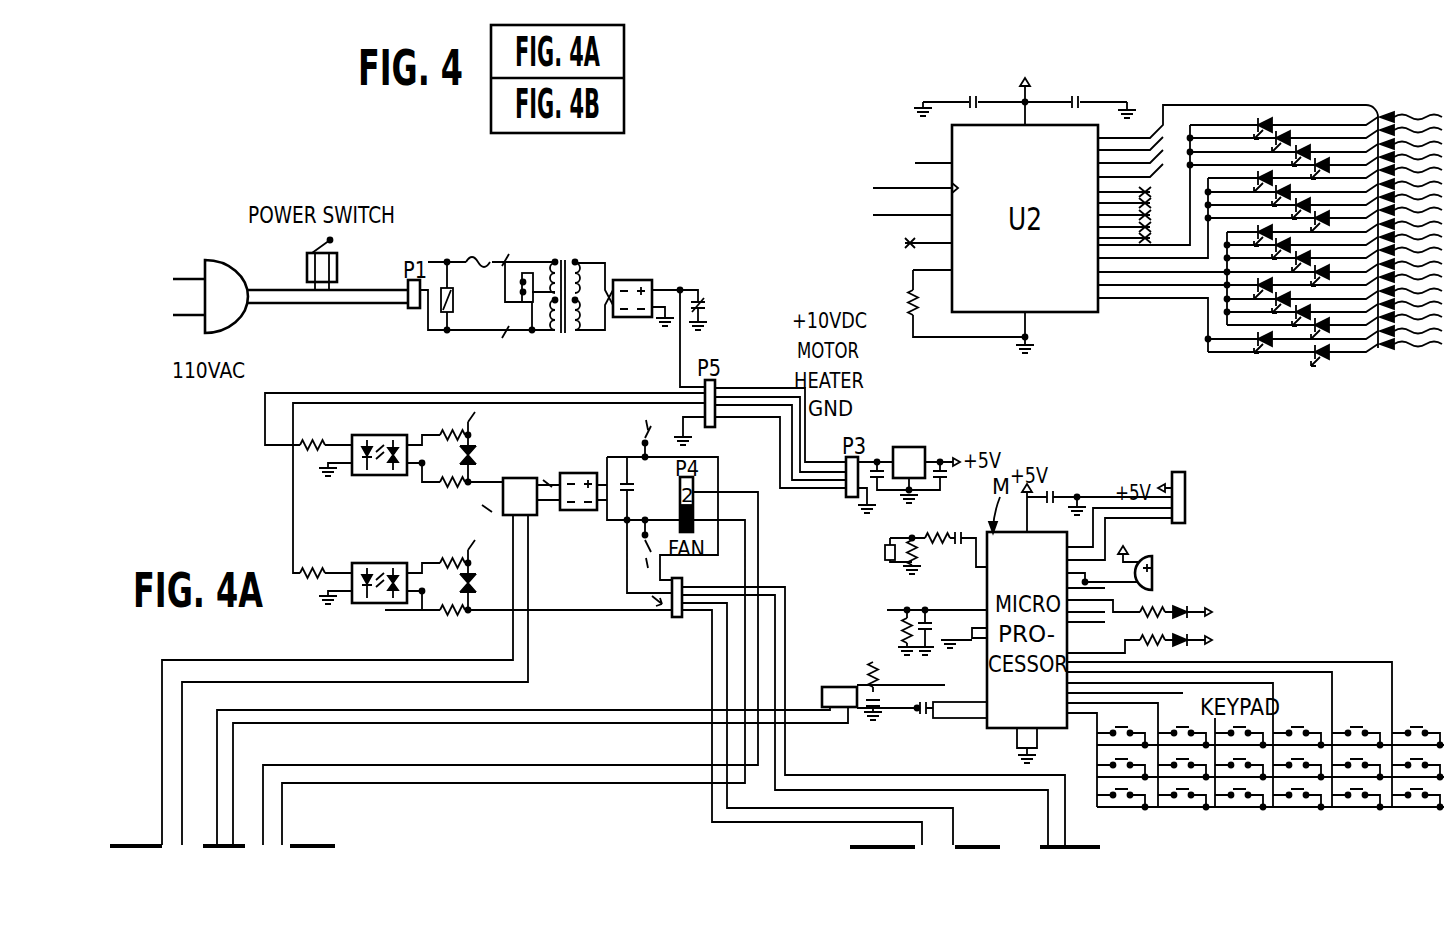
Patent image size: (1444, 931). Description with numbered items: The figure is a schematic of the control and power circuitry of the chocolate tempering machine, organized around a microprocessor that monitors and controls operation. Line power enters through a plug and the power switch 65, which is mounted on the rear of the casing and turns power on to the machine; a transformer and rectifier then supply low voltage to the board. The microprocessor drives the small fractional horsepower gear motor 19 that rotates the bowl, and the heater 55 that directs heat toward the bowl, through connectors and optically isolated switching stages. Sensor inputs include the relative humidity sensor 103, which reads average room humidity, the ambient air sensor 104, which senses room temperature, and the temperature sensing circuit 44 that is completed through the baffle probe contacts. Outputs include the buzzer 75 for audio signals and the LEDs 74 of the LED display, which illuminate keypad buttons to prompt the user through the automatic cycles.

The power switch 65 is at (338, 270).
The gear motor 19 is at (521, 471).
The LEDs 74 is at (1260, 75).
The relative humidity sensor 103 is at (888, 550).
The ambient air sensor 104 is at (921, 617).
The temperature sensing circuit 44 is at (836, 687).
The buzzer 75 is at (1170, 560).
The heater 55 is at (667, 615).